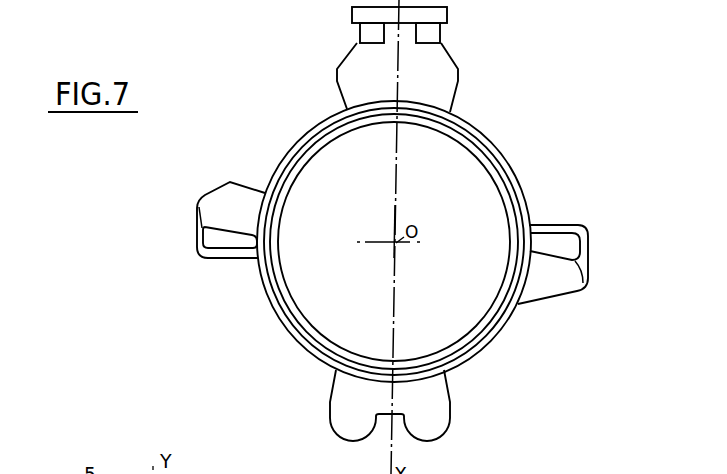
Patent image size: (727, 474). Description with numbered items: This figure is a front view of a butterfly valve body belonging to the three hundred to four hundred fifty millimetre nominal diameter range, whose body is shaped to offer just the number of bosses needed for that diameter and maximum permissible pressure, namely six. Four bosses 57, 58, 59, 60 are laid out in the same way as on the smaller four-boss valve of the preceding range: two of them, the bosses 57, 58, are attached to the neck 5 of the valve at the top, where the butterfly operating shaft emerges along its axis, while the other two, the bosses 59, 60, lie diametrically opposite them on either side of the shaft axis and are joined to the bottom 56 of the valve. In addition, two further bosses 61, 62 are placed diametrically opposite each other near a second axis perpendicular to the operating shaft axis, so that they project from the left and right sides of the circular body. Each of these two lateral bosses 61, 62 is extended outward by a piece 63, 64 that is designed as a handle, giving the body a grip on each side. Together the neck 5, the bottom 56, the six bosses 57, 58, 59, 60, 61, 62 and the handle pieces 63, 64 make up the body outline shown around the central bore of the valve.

The neck 5 is at (412, 32).
The bottom 56 is at (383, 404).
The boss 57 is at (348, 72).
The boss 58 is at (426, 82).
The boss 59 is at (336, 420).
The boss 60 is at (434, 422).
The boss 61 is at (230, 198).
The boss 62 is at (558, 293).
The piece 63 is at (221, 258).
The piece 64 is at (572, 228).